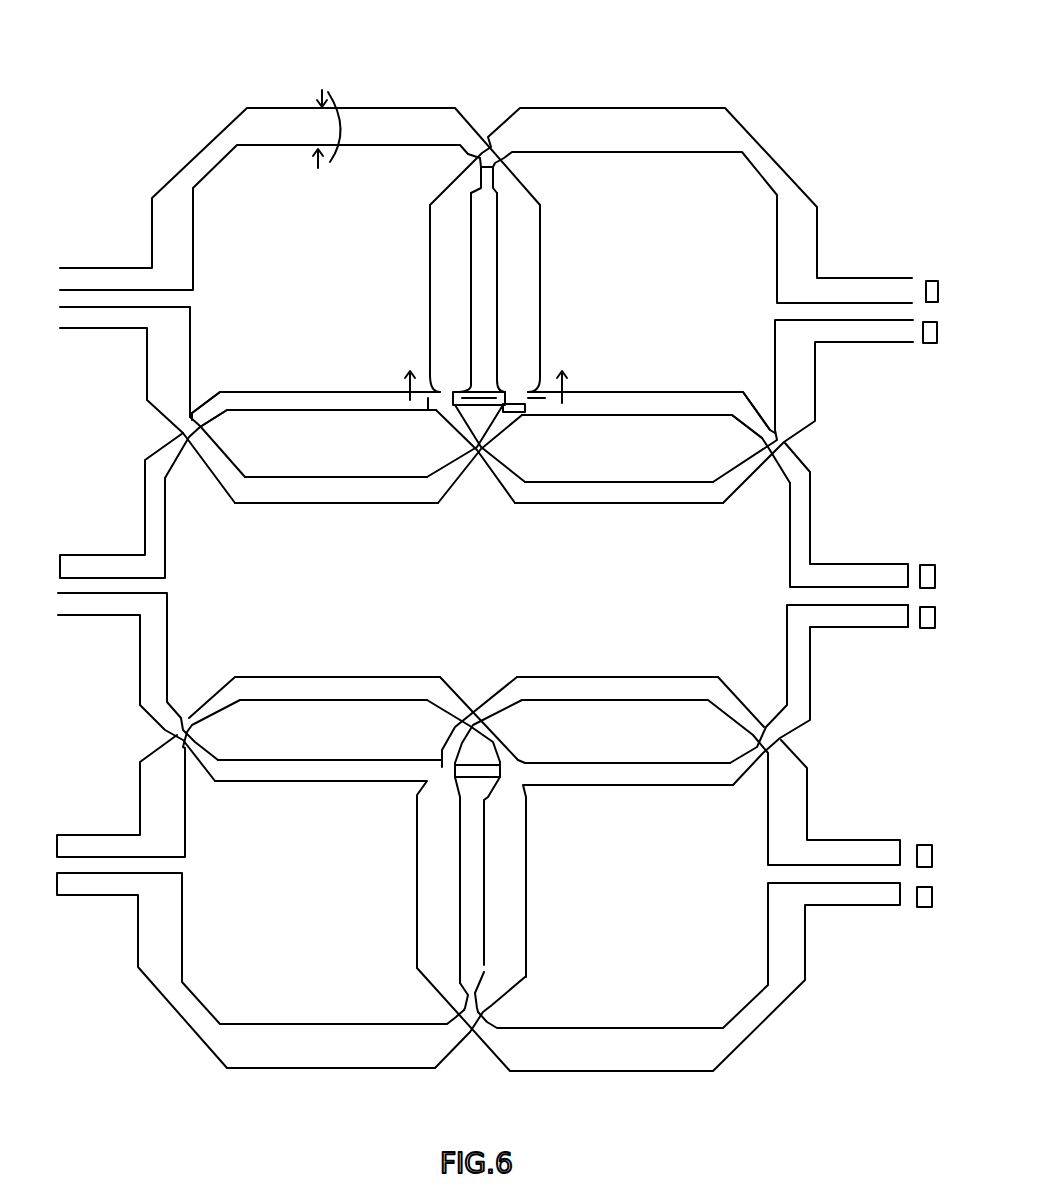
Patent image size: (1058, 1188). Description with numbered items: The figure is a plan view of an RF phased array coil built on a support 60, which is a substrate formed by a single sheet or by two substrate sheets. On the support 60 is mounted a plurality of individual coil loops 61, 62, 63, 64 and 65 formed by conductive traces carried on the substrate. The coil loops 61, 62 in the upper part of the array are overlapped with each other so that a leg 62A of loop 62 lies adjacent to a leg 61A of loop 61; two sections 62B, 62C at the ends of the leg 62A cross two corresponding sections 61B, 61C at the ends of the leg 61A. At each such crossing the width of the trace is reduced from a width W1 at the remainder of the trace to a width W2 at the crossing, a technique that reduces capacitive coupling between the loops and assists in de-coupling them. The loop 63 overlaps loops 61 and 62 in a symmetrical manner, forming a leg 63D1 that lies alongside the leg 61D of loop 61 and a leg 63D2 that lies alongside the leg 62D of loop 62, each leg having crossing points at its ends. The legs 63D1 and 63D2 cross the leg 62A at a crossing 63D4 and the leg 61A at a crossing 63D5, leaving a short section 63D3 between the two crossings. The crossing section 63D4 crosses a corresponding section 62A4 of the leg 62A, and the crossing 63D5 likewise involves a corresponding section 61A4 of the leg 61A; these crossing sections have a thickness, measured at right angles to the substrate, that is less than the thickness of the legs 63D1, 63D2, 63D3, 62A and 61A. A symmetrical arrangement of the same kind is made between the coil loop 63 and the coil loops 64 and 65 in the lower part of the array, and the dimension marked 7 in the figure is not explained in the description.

The support 60 is at (497, 610).
The coil loop 61 is at (302, 466).
The coil loop 62 is at (652, 467).
The coil loop 63 is at (477, 447).
The coil loop 64 is at (330, 678).
The coil loop 65 is at (626, 682).
The leg of loop 61 61A is at (520, 252).
The leg of loop 62 62A is at (447, 250).
The crossing section of loop 61 61B is at (500, 163).
The crossing section of loop 62 62B is at (471, 163).
The crossing section of loop 61 61C is at (495, 452).
The crossing section of loop 62 62C is at (465, 450).
The leg of loop 61 61D is at (320, 486).
The leg of loop 62 62D is at (683, 490).
The corresponding section of leg 61A 61A4 is at (545, 418).
The corresponding section of leg 62A 62A4 is at (430, 392).
The leg of loop 63 63D1 is at (280, 395).
The leg of loop 63 63D2 is at (738, 364).
The short section 63D3 is at (488, 400).
The crossing 63D4 is at (462, 393).
The crossing 63D5 is at (547, 396).
The gap width 7 is at (485, 408).
The trace width W1 is at (332, 166).
The trace width at crossing W2 is at (487, 137).